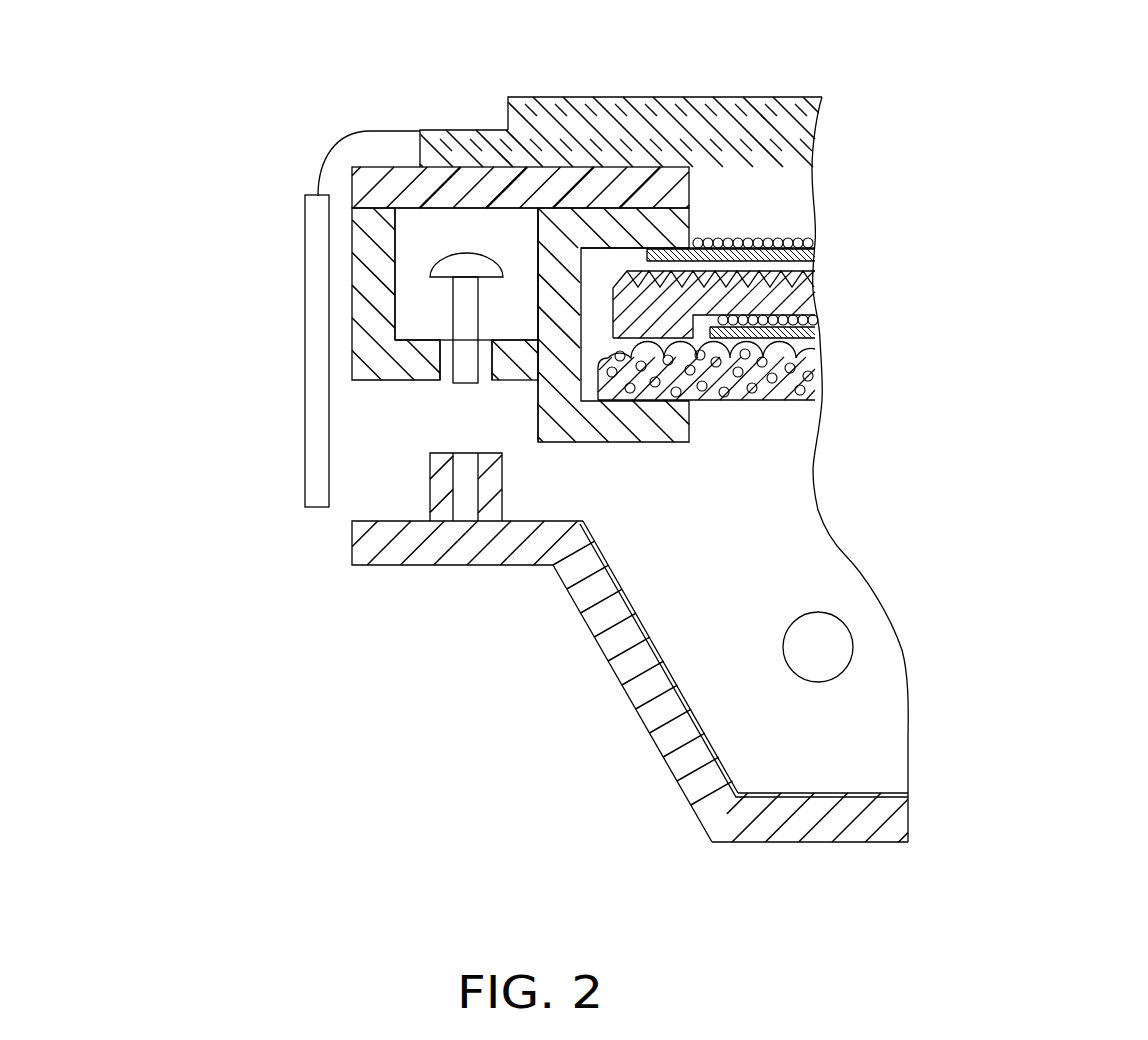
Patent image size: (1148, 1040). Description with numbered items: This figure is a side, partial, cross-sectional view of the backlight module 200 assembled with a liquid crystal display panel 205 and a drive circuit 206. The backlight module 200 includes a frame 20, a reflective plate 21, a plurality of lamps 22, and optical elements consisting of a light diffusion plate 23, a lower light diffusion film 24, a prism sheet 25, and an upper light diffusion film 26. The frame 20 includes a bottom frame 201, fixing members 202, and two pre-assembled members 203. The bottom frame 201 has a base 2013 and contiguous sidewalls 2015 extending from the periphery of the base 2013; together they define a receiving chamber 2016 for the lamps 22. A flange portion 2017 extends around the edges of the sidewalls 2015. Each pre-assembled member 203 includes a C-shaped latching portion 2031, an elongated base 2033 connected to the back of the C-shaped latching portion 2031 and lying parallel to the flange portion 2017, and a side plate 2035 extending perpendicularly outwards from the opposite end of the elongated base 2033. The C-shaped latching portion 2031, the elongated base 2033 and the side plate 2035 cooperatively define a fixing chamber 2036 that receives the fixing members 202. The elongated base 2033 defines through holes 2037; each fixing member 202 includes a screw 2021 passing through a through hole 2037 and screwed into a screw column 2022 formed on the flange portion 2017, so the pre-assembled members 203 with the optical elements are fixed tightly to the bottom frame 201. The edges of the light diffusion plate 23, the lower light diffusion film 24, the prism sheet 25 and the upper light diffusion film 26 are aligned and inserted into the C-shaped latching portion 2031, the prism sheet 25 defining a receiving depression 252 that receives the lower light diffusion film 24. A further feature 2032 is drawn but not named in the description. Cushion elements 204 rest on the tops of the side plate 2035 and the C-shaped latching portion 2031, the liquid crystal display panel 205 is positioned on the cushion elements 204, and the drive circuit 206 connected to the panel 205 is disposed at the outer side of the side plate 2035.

The backlight module 200 is at (606, 50).
The frame 20 is at (129, 275).
The bottom frame 201 is at (222, 603).
The base 2013 is at (773, 822).
The sidewalls 2015 is at (628, 662).
The receiving chamber 2016 is at (733, 682).
The flange portion 2017 is at (453, 552).
The fixing members 202 is at (198, 393).
The screw 2021 is at (467, 368).
The screw column 2022 is at (467, 500).
The pre-assembled member 203 is at (194, 253).
The C-shaped latching portion 2031 is at (557, 280).
The opening 2032 is at (515, 310).
The elongated base 2033 is at (417, 352).
The side plate 2035 is at (373, 270).
The fixing chamber 2036 is at (420, 243).
The through holes 2037 is at (450, 349).
The cushion elements 204 is at (382, 195).
The liquid crystal display panel 205 is at (775, 118).
The drive circuit 206 is at (320, 229).
The reflective plate 21 is at (808, 794).
The lamps 22 is at (825, 647).
The light diffusion plate 23 is at (810, 383).
The lower light diffusion film 24 is at (817, 332).
The prism sheet 25 is at (788, 295).
The receiving depression 252 is at (703, 330).
The upper light diffusion film 26 is at (805, 255).